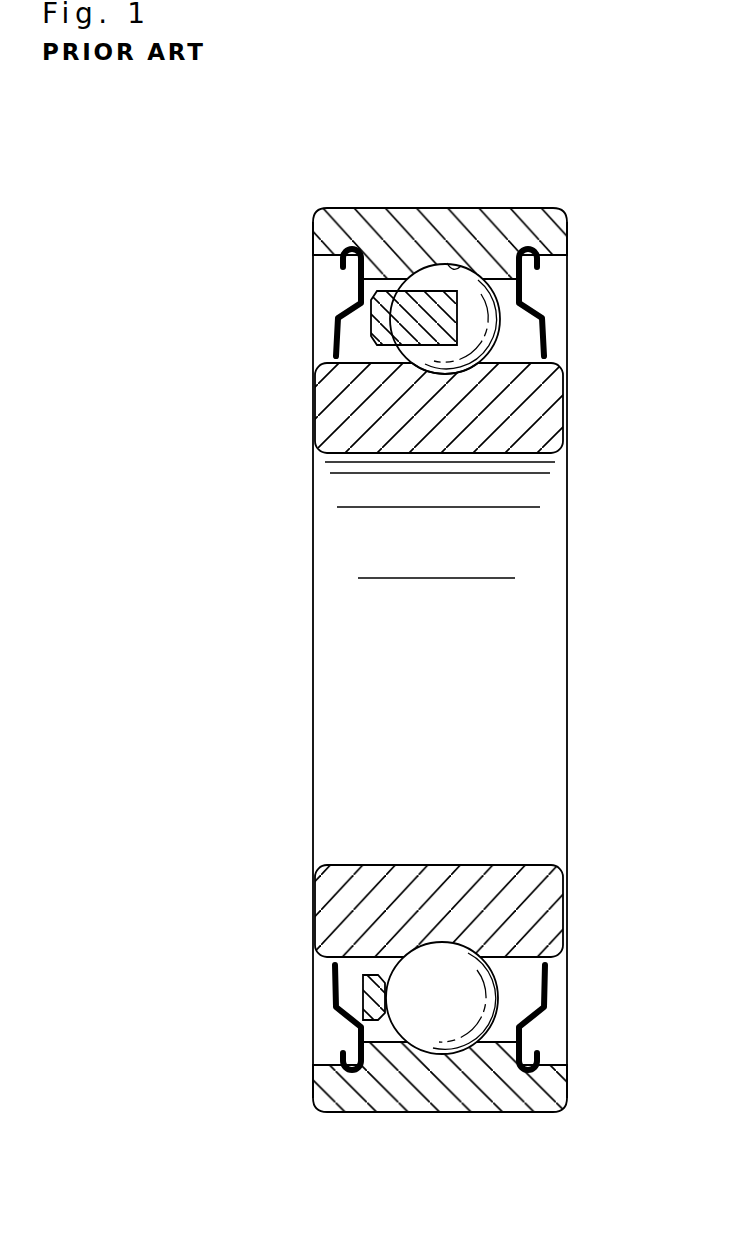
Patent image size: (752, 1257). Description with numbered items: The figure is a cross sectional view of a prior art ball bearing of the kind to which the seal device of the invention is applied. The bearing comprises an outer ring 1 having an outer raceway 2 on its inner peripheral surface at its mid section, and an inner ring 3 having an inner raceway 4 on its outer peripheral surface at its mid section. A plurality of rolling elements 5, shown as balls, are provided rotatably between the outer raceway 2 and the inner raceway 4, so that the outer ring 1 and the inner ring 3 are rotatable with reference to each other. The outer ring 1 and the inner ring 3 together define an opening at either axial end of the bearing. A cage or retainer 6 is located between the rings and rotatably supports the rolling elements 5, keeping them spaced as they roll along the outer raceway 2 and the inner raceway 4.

The outer ring 1 is at (437, 209).
The outer raceway 2 is at (463, 266).
The inner ring 3 is at (553, 437).
The inner raceway 4 is at (440, 375).
The rolling elements 5 is at (333, 355).
The cage 6 is at (375, 308).